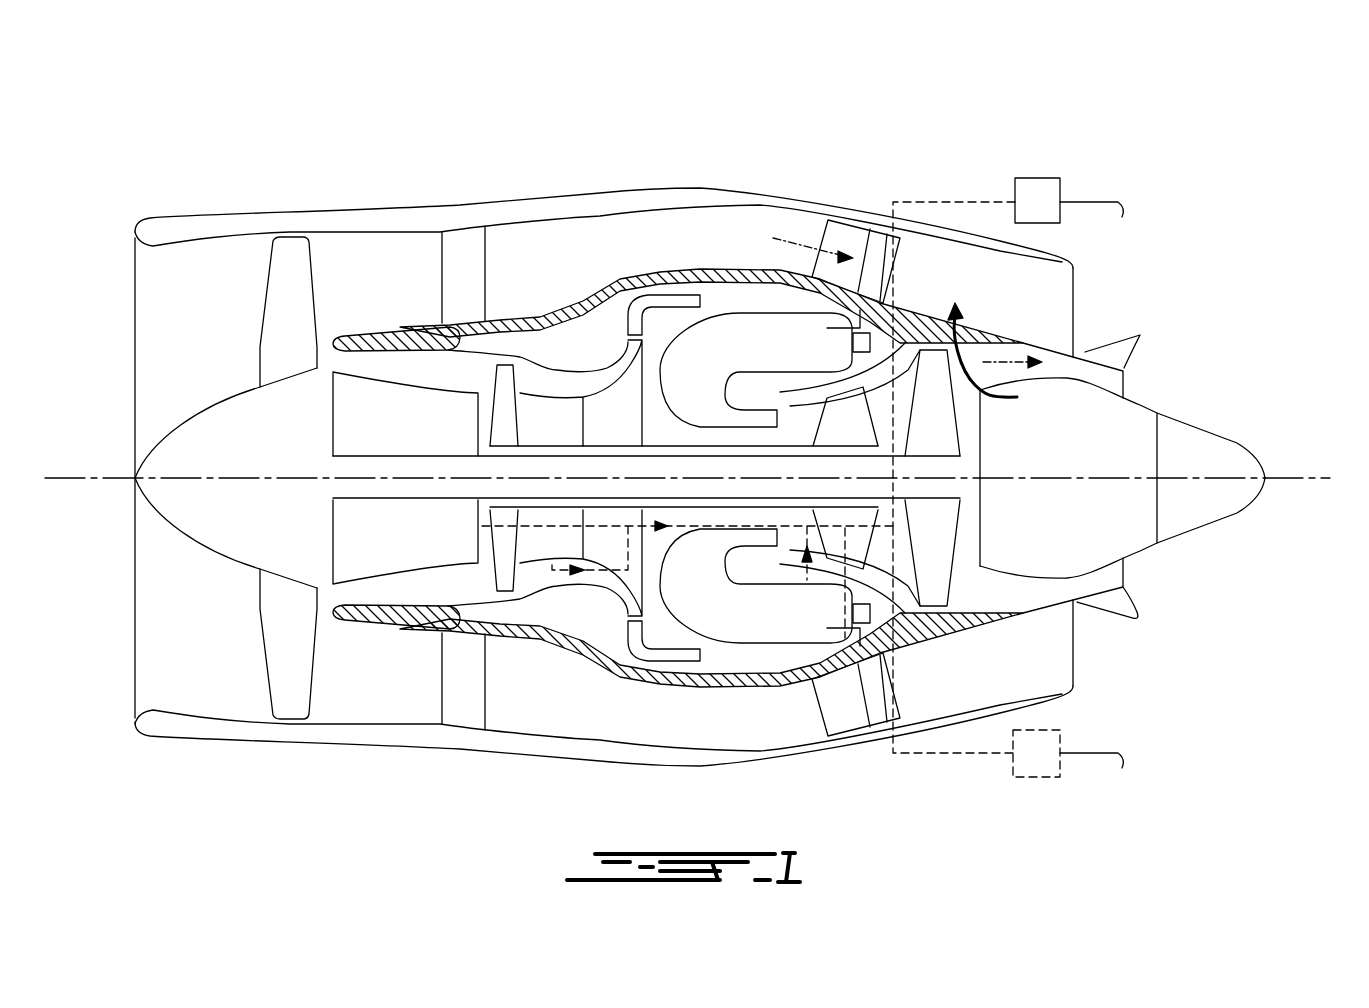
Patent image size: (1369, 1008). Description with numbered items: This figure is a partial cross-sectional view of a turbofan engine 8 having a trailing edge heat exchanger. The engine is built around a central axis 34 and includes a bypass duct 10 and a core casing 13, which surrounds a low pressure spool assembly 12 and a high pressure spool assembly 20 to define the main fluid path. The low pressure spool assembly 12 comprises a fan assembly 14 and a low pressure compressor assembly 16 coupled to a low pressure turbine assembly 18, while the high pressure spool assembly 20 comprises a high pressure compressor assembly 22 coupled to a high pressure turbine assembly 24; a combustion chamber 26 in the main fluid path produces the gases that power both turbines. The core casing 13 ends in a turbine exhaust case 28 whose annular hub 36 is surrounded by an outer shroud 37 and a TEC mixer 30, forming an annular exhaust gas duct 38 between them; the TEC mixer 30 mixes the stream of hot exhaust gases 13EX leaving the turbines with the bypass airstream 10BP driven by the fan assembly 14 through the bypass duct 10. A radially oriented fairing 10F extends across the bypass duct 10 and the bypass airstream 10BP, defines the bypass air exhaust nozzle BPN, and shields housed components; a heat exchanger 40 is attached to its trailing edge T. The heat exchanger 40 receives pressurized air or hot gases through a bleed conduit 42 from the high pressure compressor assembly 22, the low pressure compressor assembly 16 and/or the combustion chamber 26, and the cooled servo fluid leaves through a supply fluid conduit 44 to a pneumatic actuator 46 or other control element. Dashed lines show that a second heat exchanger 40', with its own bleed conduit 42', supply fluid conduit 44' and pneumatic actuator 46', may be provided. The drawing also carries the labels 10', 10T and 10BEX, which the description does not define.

The turbofan engine 8 is at (1097, 150).
The gas turbine engine 10' is at (405, 313).
The bypass duct 10 is at (598, 436).
The fan assembly 14 is at (268, 280).
The low pressure compressor assembly 16 is at (350, 415).
The low pressure spool assembly 12 is at (413, 456).
The high pressure compressor assembly 22 is at (514, 378).
The high pressure spool assembly 20 is at (562, 446).
The core casing 13 is at (700, 268).
The combustion chamber 26 is at (770, 357).
The high pressure turbine assembly 24 is at (855, 432).
The low pressure turbine assembly 18 is at (947, 531).
The annular hub 36 is at (1072, 531).
The central axis 34 is at (1303, 477).
The stream of hot exhaust gases 13EX is at (1007, 363).
The outer shroud 37 is at (1012, 617).
The TEC mixer 30 is at (1112, 353).
The annular exhaust gas duct 38 is at (1057, 583).
The turbine exhaust case 28 is at (1108, 285).
The engine tail 10T is at (1232, 237).
The bypass exhaust 10BEX is at (1208, 324).
The bypass air exhaust nozzle BPN is at (1008, 358).
The bypass airstream 10BP is at (810, 241).
The fairing 10F is at (850, 232).
The heat exchanger 40 is at (918, 265).
The heat exchanger 40' is at (920, 691).
The trailing edge T is at (865, 272).
The supply fluid conduit 44 is at (954, 334).
The supply fluid conduit 44' is at (953, 671).
The pneumatic actuator 46 is at (1069, 200).
The pneumatic actuator 46' is at (1068, 753).
The bleed conduit 42 is at (685, 671).
The bleed conduit 42' is at (801, 583).